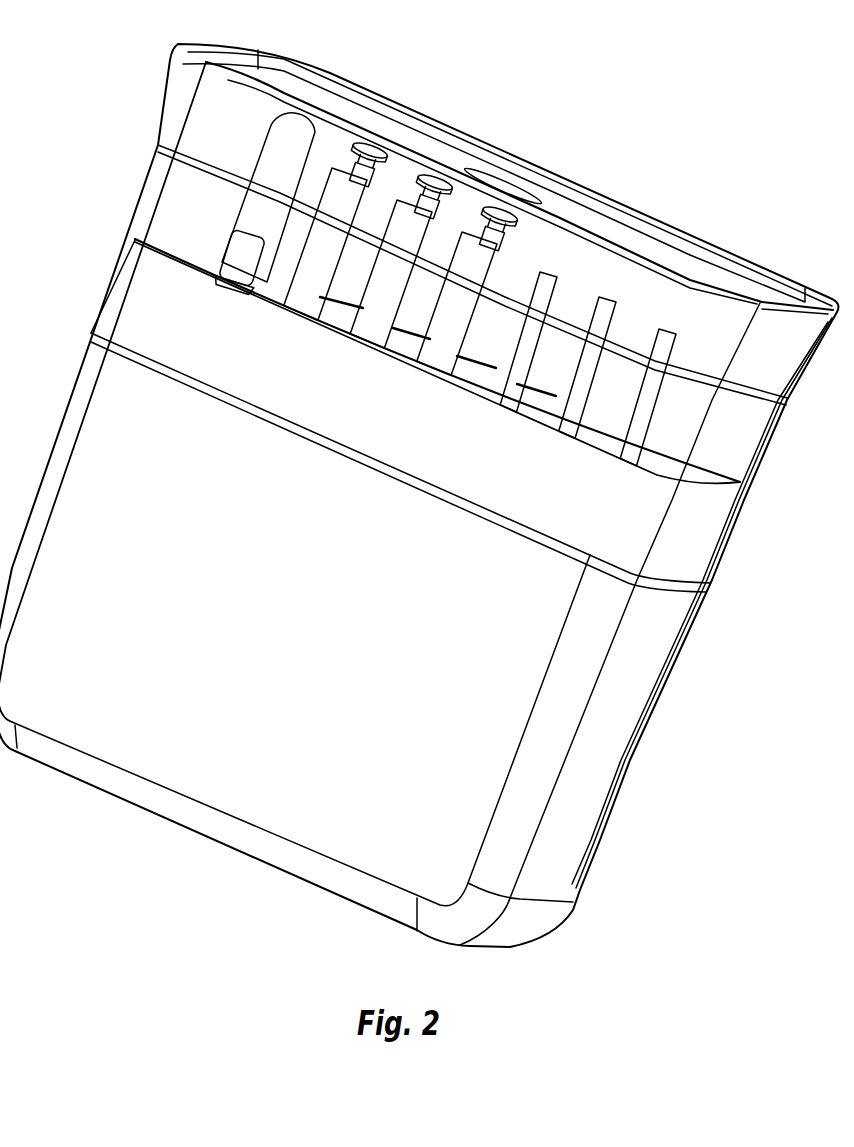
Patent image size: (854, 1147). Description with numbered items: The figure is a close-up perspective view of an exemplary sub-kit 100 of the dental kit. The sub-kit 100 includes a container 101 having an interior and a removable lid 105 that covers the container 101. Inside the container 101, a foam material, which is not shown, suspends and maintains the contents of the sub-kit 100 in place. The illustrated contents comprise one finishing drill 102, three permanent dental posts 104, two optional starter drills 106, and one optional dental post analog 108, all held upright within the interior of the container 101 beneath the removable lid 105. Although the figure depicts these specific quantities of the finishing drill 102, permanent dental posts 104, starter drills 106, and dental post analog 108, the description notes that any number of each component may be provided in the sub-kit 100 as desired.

The sub-kit 100 is at (702, 56).
The container 101 is at (651, 646).
The finishing drill 102 is at (345, 178).
The permanent dental posts 104 is at (550, 270).
The removable lid 105 is at (173, 123).
The starter drills 106 is at (440, 165).
The dental post analog 108 is at (280, 155).